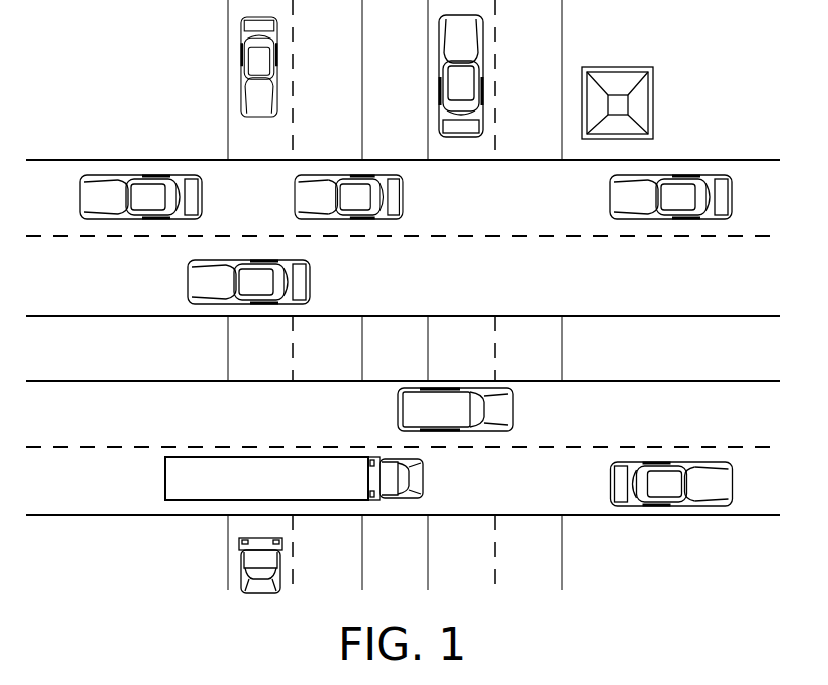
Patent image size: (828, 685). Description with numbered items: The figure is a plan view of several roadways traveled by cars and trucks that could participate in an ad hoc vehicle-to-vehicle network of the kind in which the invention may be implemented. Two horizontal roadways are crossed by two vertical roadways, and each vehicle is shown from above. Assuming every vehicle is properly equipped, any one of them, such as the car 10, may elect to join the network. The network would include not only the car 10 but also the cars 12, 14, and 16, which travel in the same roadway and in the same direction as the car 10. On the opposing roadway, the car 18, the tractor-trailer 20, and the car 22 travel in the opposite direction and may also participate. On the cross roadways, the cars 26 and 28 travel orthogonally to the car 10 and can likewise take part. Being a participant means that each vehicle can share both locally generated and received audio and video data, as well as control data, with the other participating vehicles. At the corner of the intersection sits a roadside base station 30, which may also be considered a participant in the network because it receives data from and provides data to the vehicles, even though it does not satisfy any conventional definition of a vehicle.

The car 10 is at (186, 300).
The car 12 is at (155, 178).
The car 14 is at (348, 175).
The car 16 is at (670, 173).
The car 18 is at (447, 388).
The tractor-trailer 20 is at (195, 500).
The car 22 is at (698, 501).
The car 26 is at (245, 83).
The car 28 is at (442, 50).
The base station 30 is at (653, 102).